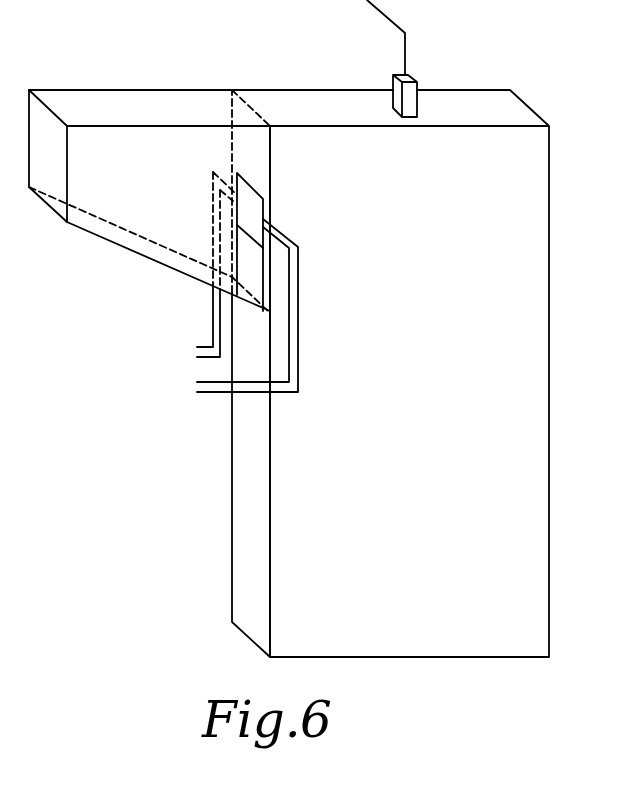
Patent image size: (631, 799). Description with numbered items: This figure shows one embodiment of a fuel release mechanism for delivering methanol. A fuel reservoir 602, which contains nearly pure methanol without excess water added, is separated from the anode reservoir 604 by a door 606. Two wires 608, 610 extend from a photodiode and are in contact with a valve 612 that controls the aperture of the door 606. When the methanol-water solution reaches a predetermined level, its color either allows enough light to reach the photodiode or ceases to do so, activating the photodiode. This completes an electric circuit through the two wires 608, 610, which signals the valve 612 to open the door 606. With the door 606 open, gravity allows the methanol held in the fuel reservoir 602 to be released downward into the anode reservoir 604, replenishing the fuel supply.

The fuel reservoir 602 is at (140, 100).
The anode reservoir 604 is at (535, 280).
The door 606 is at (245, 260).
The wire 608 is at (203, 352).
The wire 610 is at (212, 387).
The valve 612 is at (252, 200).